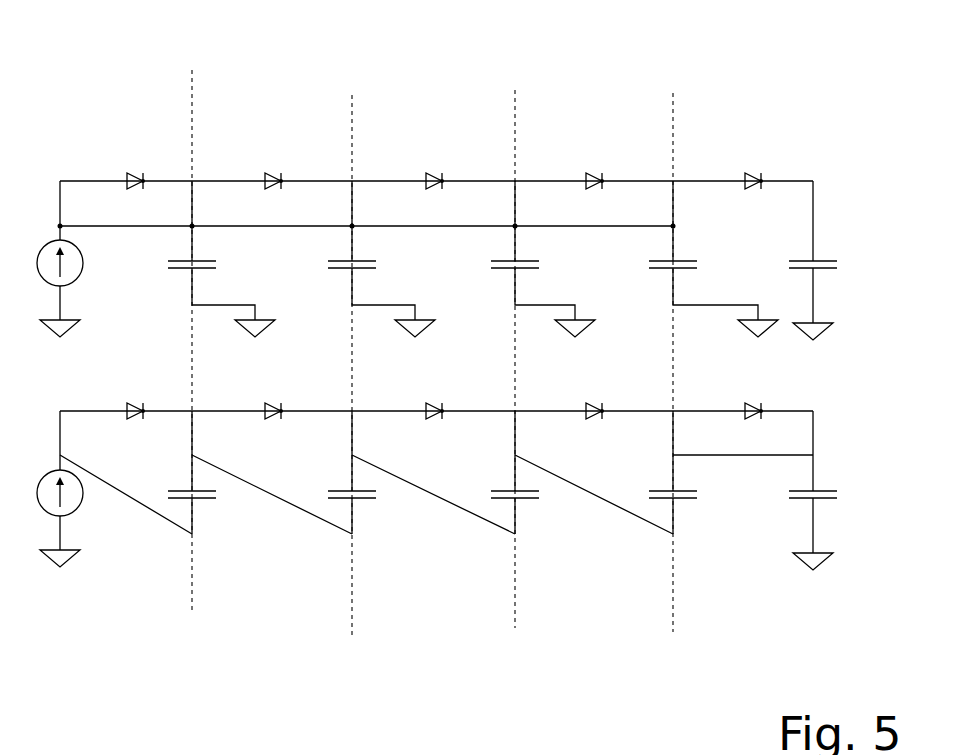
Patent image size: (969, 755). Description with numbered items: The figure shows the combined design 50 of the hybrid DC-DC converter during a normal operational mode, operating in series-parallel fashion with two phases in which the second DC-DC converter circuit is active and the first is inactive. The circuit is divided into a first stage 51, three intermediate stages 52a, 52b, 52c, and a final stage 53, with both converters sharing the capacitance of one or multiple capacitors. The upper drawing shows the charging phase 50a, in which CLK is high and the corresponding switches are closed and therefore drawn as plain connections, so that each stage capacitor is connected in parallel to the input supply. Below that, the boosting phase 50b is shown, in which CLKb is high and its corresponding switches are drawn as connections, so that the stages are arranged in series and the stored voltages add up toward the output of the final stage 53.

The combined design 50 is at (128, 139).
The first stage 51 is at (133, 92).
The first intermediate stage 52a is at (250, 127).
The second intermediate stage 52b is at (420, 126).
The third intermediate stage 52c is at (598, 120).
The final stage 53 is at (758, 133).
The charging phase 50a is at (832, 248).
The boosting phase 50b is at (836, 512).